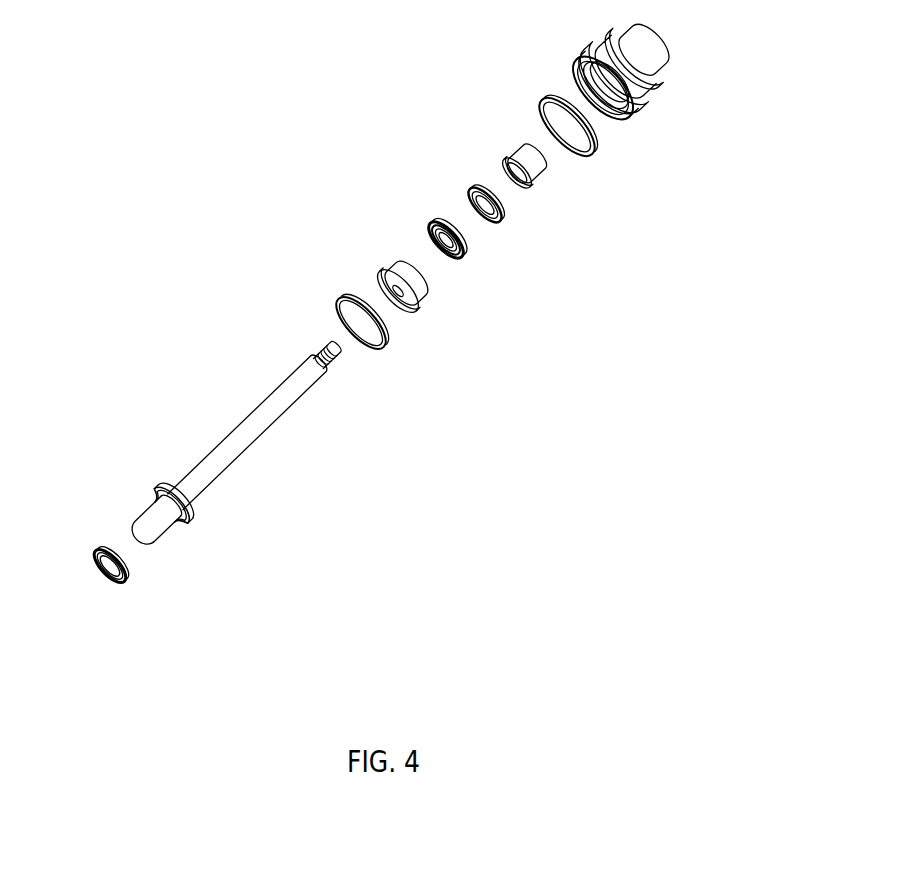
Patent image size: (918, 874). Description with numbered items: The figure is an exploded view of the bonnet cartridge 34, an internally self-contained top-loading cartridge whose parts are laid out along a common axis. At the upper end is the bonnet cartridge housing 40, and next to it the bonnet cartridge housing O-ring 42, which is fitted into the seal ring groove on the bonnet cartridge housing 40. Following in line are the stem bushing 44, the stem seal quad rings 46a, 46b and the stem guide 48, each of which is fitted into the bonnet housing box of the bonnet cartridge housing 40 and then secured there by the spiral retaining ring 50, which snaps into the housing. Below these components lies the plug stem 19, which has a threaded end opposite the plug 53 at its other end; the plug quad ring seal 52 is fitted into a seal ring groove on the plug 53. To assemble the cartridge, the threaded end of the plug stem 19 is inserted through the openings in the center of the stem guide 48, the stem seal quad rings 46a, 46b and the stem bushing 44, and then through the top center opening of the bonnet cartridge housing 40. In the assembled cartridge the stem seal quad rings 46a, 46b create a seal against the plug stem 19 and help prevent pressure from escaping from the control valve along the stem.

The bonnet cartridge 34 is at (222, 297).
The bonnet cartridge housing 40 is at (638, 99).
The bonnet cartridge housing O-ring 42 is at (595, 143).
The stem bushing 44 is at (545, 170).
The stem seal quad ring 46a is at (498, 213).
The stem seal quad ring 46b is at (465, 243).
The stem guide 48 is at (430, 283).
The spiral retaining ring 50 is at (388, 335).
The plug stem 19 is at (287, 402).
The plug 53 is at (150, 535).
The plug quad ring seal 52 is at (127, 570).